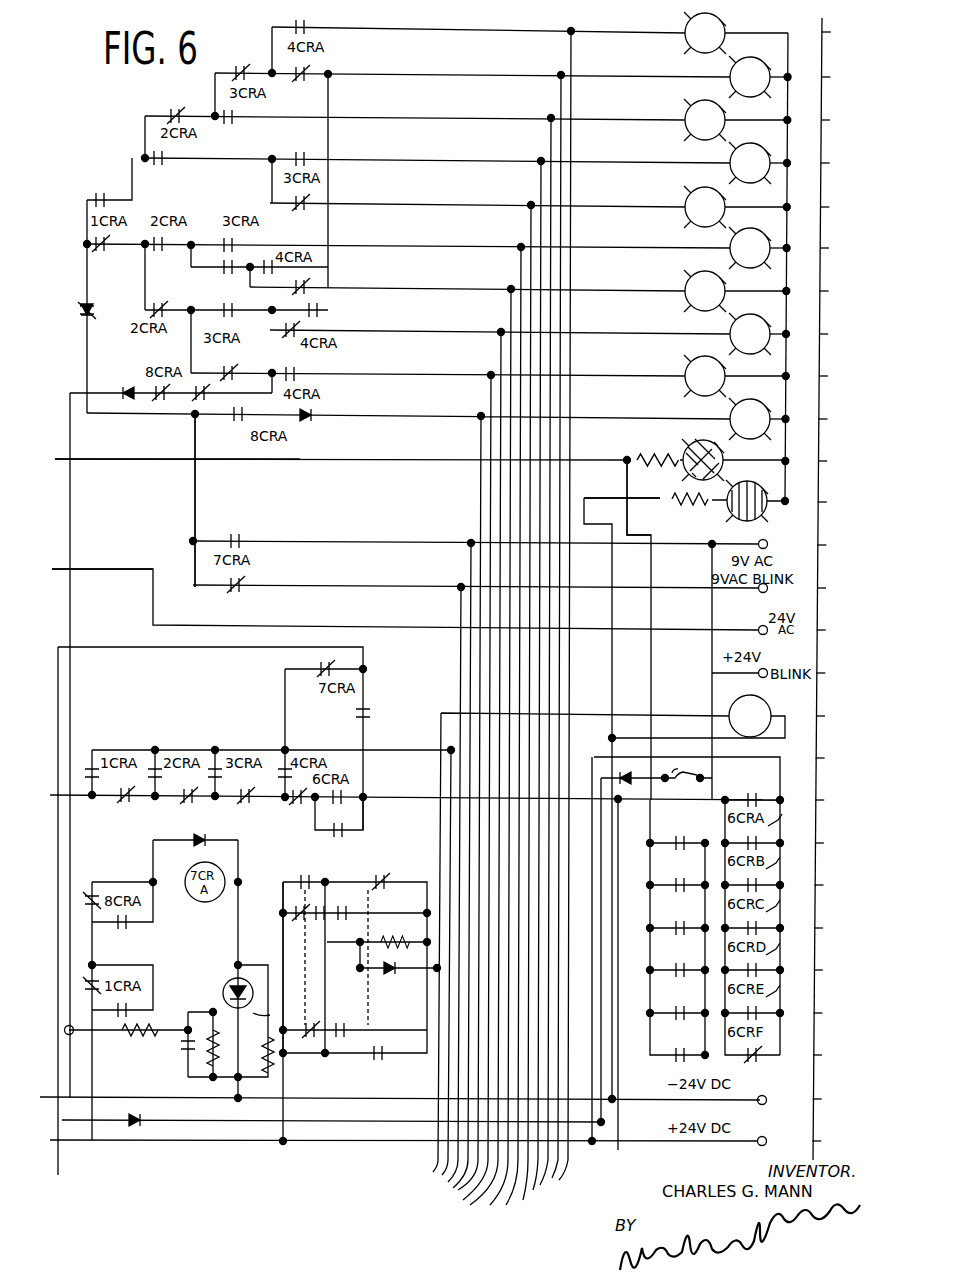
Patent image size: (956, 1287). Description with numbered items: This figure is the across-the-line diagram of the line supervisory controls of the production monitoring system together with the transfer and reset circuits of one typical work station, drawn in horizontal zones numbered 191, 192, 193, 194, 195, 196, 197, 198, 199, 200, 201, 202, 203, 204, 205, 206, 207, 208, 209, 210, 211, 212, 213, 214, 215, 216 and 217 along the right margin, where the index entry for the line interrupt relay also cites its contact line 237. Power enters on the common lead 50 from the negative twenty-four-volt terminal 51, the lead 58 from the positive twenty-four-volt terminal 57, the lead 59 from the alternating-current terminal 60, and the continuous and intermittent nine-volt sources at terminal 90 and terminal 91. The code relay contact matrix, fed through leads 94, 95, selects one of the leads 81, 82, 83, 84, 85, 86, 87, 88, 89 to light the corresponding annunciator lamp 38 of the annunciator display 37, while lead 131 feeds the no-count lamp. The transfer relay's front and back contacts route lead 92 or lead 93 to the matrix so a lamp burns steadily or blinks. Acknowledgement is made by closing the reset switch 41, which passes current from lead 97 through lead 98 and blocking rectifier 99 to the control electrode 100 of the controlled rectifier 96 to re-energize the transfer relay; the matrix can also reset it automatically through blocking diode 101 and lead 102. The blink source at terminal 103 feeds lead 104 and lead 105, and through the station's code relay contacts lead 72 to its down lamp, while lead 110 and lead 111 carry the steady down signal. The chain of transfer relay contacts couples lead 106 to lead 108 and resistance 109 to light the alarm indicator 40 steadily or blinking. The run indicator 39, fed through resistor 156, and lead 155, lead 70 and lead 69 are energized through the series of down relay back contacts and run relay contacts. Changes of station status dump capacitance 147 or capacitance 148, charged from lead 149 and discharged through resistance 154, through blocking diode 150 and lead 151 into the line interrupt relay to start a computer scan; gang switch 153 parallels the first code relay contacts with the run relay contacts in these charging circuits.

The annunciator display 37 is at (626, 234).
The annunciator lamps 38 is at (688, 89).
The run indicator 39 is at (720, 452).
The alarm indicator 40 is at (751, 486).
The reset switch 41 is at (684, 780).
The common lead 50 is at (610, 606).
The terminal 51 is at (768, 1097).
The terminal 57 is at (778, 1134).
The lead 58 is at (780, 760).
The lead 59 is at (92, 572).
The terminal 60 is at (756, 624).
The lead 69 is at (319, 459).
The lead 70 is at (630, 474).
The lead 72 is at (76, 797).
The lead 81 is at (560, 82).
The lead 82 is at (508, 296).
The lead 83 is at (530, 210).
The lead 84 is at (498, 338).
The lead 85 is at (550, 124).
The lead 86 is at (518, 254).
The lead 87 is at (540, 167).
The lead 88 is at (490, 382).
The lead 89 is at (570, 38).
The terminal 90 is at (774, 545).
The terminal 91 is at (774, 593).
The lead 92 is at (470, 544).
The lead 93 is at (460, 580).
The lead 94 is at (197, 491).
The lead 95 is at (90, 345).
The controlled rectifier 96 is at (228, 975).
The lead 97 is at (710, 690).
The lead 98 is at (52, 1063).
The blocking rectifier 99 is at (633, 772).
The control electrode 100 is at (216, 1014).
The blocking diode 101 is at (130, 385).
The lead 102 is at (70, 613).
The terminal 103 is at (752, 677).
The lead 104 is at (652, 676).
The lead 105 is at (436, 748).
The lead 106 is at (208, 648).
The lead 108 is at (618, 498).
The resistance 109 is at (678, 506).
The lead 110 is at (693, 804).
The lead 111 is at (313, 814).
The lead 131 is at (480, 424).
The capacitance 147 is at (350, 977).
The capacitance 148 is at (352, 946).
The lead 149 is at (284, 938).
The blocking diode 150 is at (384, 976).
The lead 151 is at (623, 712).
The gang switch 153 is at (302, 920).
The resistance 154 is at (377, 933).
The lead 155 is at (705, 1058).
The resistor 156 is at (666, 446).
The line number 191 is at (843, 32).
The line number 192 is at (842, 77).
The line number 193 is at (842, 120).
The line number 194 is at (842, 163).
The line number 195 is at (841, 207).
The line number 196 is at (841, 248).
The line number 197 is at (841, 291).
The line number 198 is at (840, 334).
The line number 199 is at (840, 376).
The line number 200 is at (840, 419).
The line number 201 is at (839, 461).
The line number 202 is at (839, 502).
The line number 203 is at (838, 545).
The line number 204 is at (838, 588).
The line number 205 is at (838, 630).
The line number 206 is at (837, 673).
The line number 207 is at (863, 724).
The line number 208 is at (837, 758).
The line number 209 is at (836, 800).
The line number 210 is at (836, 843).
The line number 211 is at (869, 926).
The line number 212 is at (835, 928).
The line number 213 is at (835, 970).
The line number 214 is at (834, 1013).
The line number 215 is at (835, 1055).
The line number 216 is at (834, 1099).
The line number 217 is at (833, 1141).
The contact line number 237 is at (698, 716).